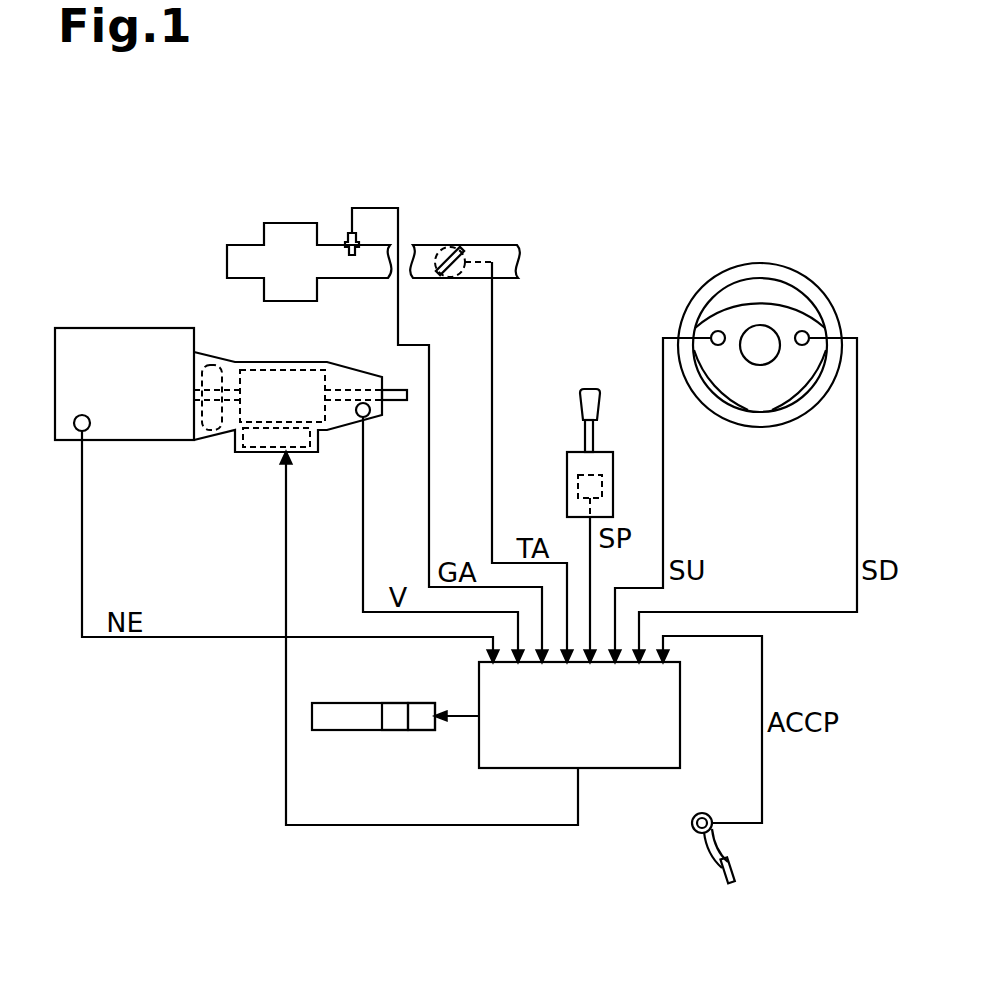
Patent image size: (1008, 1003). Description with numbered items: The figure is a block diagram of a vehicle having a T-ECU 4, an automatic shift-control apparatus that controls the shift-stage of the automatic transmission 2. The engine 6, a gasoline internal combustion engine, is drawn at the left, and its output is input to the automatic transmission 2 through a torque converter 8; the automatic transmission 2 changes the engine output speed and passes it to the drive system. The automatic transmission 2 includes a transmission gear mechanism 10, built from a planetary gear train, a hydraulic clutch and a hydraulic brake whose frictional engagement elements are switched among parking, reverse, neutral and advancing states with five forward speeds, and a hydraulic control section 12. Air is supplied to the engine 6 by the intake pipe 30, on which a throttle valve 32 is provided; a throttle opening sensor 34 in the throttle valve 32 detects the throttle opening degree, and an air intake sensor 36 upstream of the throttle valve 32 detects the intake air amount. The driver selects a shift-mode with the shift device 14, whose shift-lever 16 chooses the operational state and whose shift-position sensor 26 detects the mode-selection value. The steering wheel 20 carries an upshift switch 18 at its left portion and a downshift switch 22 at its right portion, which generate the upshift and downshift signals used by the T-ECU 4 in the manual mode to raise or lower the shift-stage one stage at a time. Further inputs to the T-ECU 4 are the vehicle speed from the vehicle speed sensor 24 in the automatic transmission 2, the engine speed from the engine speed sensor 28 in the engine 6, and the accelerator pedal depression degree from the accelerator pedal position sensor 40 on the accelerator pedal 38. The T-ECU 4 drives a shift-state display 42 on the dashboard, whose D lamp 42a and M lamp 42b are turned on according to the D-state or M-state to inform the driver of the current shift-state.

The automatic transmission 2 is at (266, 360).
The T-ECU 4 is at (680, 720).
The engine 6 is at (137, 328).
The torque converter 8 is at (212, 362).
The transmission gear mechanism 10 is at (310, 368).
The hydraulic control section 12 is at (300, 452).
The shift device 14 is at (567, 488).
The shift-lever 16 is at (590, 389).
The upshift switch 18 is at (702, 324).
The steering wheel 20 is at (790, 427).
The downshift switch 22 is at (818, 324).
The vehicle speed sensor 24 is at (369, 418).
The shift-position sensor 26 is at (602, 488).
The engine speed sensor 28 is at (90, 428).
The intake pipe 30 is at (505, 245).
The throttle valve 32 is at (451, 247).
The throttle opening sensor 34 is at (457, 277).
The air intake sensor 36 is at (350, 233).
The accelerator pedal 38 is at (736, 872).
The accelerator pedal position sensor 40 is at (703, 812).
The shift-state display 42 is at (391, 718).
The D lamp 42a is at (395, 703).
The M lamp 42b is at (422, 703).